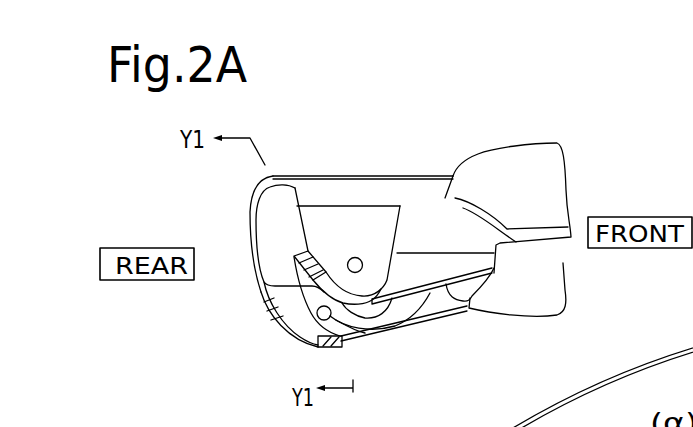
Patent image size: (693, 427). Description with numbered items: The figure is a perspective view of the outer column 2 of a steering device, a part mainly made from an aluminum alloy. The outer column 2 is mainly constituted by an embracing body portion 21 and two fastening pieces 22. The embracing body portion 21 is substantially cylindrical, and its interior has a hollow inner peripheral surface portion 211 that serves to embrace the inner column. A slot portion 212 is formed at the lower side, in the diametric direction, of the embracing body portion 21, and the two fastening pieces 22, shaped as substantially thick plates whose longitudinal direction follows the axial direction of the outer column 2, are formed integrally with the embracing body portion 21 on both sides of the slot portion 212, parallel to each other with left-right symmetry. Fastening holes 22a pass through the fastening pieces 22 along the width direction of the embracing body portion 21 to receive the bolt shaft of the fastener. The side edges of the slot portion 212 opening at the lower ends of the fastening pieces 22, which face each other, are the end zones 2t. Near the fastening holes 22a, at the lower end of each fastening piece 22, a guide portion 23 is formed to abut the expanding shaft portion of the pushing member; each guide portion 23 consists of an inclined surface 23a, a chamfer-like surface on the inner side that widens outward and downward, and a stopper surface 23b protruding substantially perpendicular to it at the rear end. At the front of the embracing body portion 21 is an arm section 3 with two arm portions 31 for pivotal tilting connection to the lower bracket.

The outer column 2 is at (383, 165).
The embracing body portion 21 is at (345, 176).
The inner peripheral surface portion 211 is at (273, 219).
The slot portion 212 is at (296, 306).
The fastening piece 22 is at (429, 282).
The fastening hole 22a is at (358, 259).
The guide portion 23 is at (368, 310).
The inclined surface 23a is at (342, 341).
The stopper surface 23b is at (332, 348).
The end zone 2t is at (340, 362).
The arm section 3 is at (533, 147).
The arm portion 31 is at (552, 163).